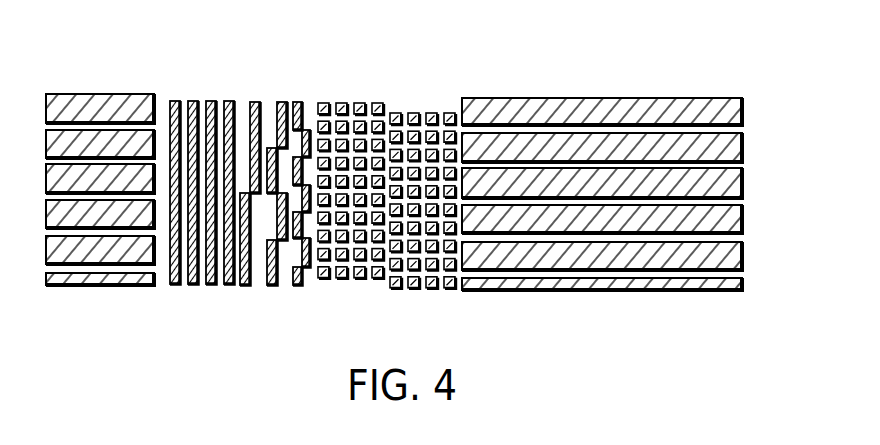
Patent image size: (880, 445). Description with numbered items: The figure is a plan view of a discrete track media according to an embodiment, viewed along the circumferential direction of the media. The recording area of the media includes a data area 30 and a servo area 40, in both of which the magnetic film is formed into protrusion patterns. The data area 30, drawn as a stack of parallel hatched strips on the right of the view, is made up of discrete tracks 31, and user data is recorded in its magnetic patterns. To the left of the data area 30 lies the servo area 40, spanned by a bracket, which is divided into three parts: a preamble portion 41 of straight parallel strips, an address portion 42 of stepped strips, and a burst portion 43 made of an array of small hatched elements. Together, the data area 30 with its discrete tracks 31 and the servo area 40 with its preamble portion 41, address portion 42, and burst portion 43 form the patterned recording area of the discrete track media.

The data area 30 is at (742, 85).
The discrete tracks 31 is at (730, 113).
The servo area 40 is at (448, 85).
The preamble portion 41 is at (232, 290).
The address portion 42 is at (308, 290).
The burst portion 43 is at (455, 290).